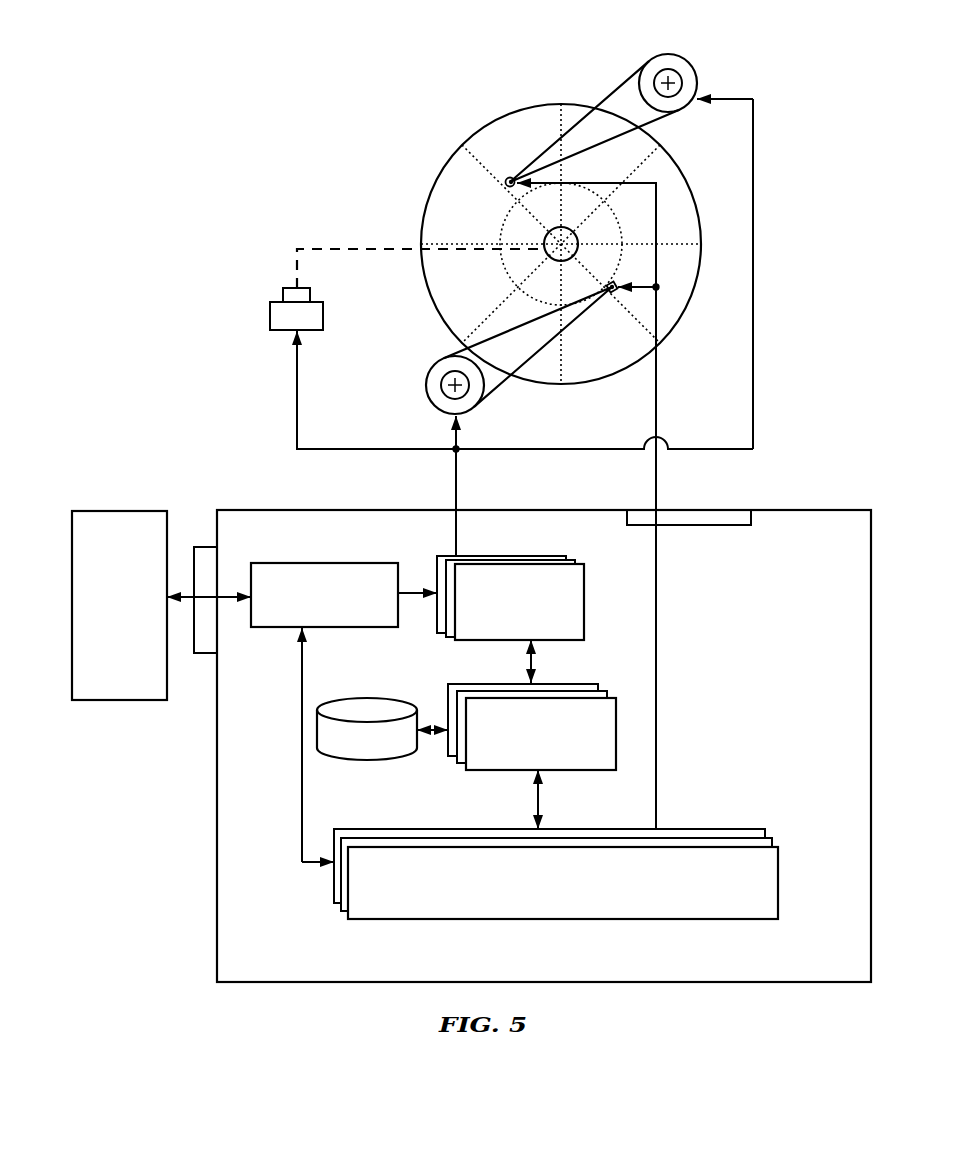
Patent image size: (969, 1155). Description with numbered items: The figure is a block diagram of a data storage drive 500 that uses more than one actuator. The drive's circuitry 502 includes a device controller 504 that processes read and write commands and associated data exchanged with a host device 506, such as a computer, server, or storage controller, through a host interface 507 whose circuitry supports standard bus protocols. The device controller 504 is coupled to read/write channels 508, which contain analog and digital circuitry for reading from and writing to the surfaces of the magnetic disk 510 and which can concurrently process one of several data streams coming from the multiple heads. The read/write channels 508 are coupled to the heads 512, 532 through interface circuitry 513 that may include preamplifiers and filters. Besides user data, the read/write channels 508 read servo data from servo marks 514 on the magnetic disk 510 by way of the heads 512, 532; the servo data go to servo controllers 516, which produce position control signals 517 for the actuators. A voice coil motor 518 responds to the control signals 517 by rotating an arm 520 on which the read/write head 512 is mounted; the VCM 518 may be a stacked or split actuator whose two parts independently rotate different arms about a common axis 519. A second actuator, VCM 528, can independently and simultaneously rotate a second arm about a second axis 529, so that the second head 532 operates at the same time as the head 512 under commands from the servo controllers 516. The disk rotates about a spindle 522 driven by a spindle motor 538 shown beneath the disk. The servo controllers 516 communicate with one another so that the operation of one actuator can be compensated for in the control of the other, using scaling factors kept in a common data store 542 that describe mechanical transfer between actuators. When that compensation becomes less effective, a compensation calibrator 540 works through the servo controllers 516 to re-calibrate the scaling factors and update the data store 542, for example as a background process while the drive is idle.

The data storage drive 500 is at (158, 243).
The circuitry 502 is at (222, 510).
The device controller 504 is at (285, 563).
The host device 506 is at (106, 511).
The host interface 507 is at (194, 654).
The read/write channels 508 is at (726, 829).
The magnetic disk 510 is at (466, 140).
The read/write head 512 is at (615, 296).
The interface circuitry 513 is at (752, 518).
The servo marks 514 is at (650, 160).
The servo controllers 516 is at (515, 556).
The position control signals 517 is at (456, 478).
The voice coil motor 518 is at (443, 392).
The common axis 519 is at (431, 401).
The arm 520 is at (490, 352).
The spindle / hub 522 is at (500, 234).
The second actuator (VCM) 528 is at (698, 83).
The second axis 529 is at (681, 81).
The second read/write head 532 is at (510, 176).
The spindle motor 538 is at (269, 316).
The compensation calibrator 540 is at (483, 688).
The data store 542 is at (362, 702).